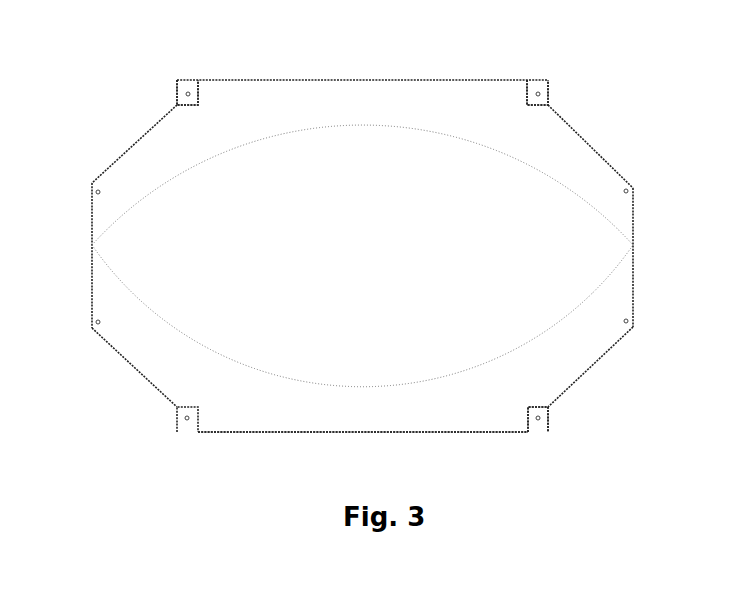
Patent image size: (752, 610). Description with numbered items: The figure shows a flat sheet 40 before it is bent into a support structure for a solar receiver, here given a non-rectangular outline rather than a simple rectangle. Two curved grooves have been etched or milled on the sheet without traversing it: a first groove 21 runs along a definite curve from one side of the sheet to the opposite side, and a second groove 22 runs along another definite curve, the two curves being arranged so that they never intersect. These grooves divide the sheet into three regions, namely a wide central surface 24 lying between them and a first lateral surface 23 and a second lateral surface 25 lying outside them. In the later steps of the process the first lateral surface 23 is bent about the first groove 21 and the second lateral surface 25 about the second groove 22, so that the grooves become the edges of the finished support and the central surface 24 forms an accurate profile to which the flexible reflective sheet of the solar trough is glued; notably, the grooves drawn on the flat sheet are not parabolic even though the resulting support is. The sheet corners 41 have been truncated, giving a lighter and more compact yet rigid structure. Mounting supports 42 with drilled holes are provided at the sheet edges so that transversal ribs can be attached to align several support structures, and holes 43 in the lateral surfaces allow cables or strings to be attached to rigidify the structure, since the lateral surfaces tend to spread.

The lens frame assembly 40 is at (133, 100).
The first groove 21 is at (497, 158).
The second groove 22 is at (538, 332).
The first lateral surface 23 is at (140, 176).
The central surface 24 is at (150, 252).
The second lateral surface 25 is at (140, 332).
The sheet corners 41 is at (587, 375).
The mounting supports 42 is at (190, 92).
The holes 43 is at (633, 318).